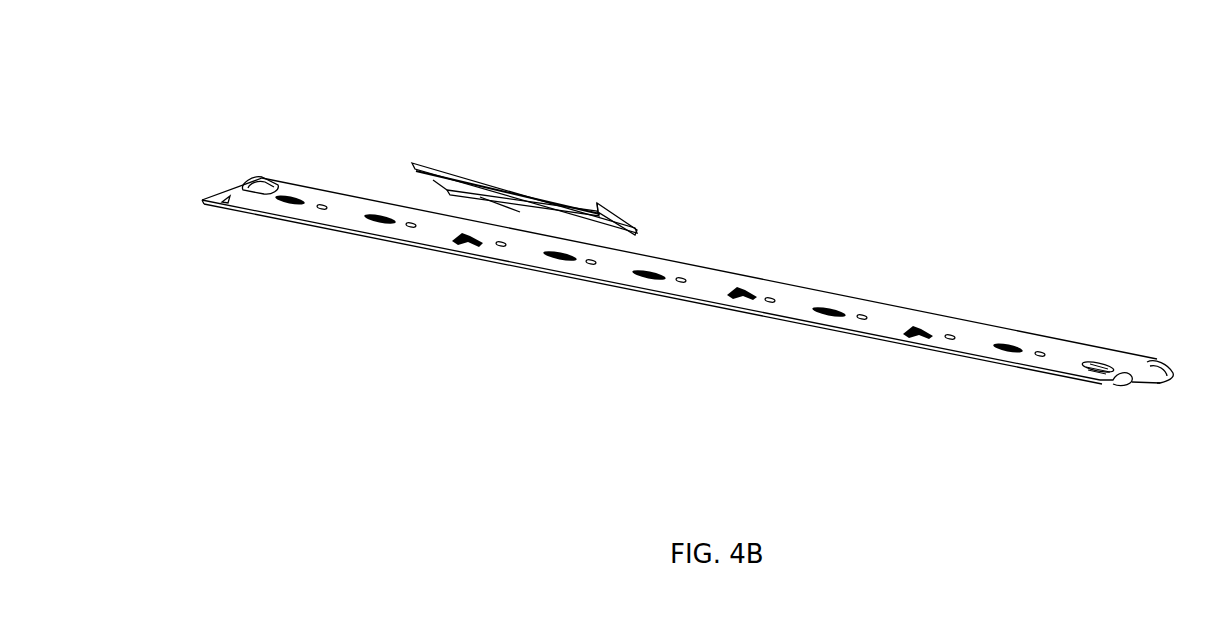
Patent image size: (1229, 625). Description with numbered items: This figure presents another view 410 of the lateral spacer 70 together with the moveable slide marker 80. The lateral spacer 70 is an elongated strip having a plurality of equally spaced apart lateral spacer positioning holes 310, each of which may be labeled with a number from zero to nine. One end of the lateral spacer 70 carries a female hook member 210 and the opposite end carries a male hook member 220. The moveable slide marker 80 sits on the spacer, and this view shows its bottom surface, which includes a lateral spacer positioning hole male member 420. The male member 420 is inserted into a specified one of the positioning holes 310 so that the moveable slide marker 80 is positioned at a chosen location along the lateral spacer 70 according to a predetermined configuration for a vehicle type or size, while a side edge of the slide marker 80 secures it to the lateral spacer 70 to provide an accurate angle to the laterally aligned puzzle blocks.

The view 410 is at (883, 128).
The lateral spacer 70 is at (1020, 332).
The female hook member 210 is at (238, 190).
The male hook member 220 is at (1170, 378).
The lateral spacer positioning hole 310 is at (866, 318).
The lateral spacer positioning hole male member 420 is at (513, 205).
The moveable slide marker 80 is at (597, 205).